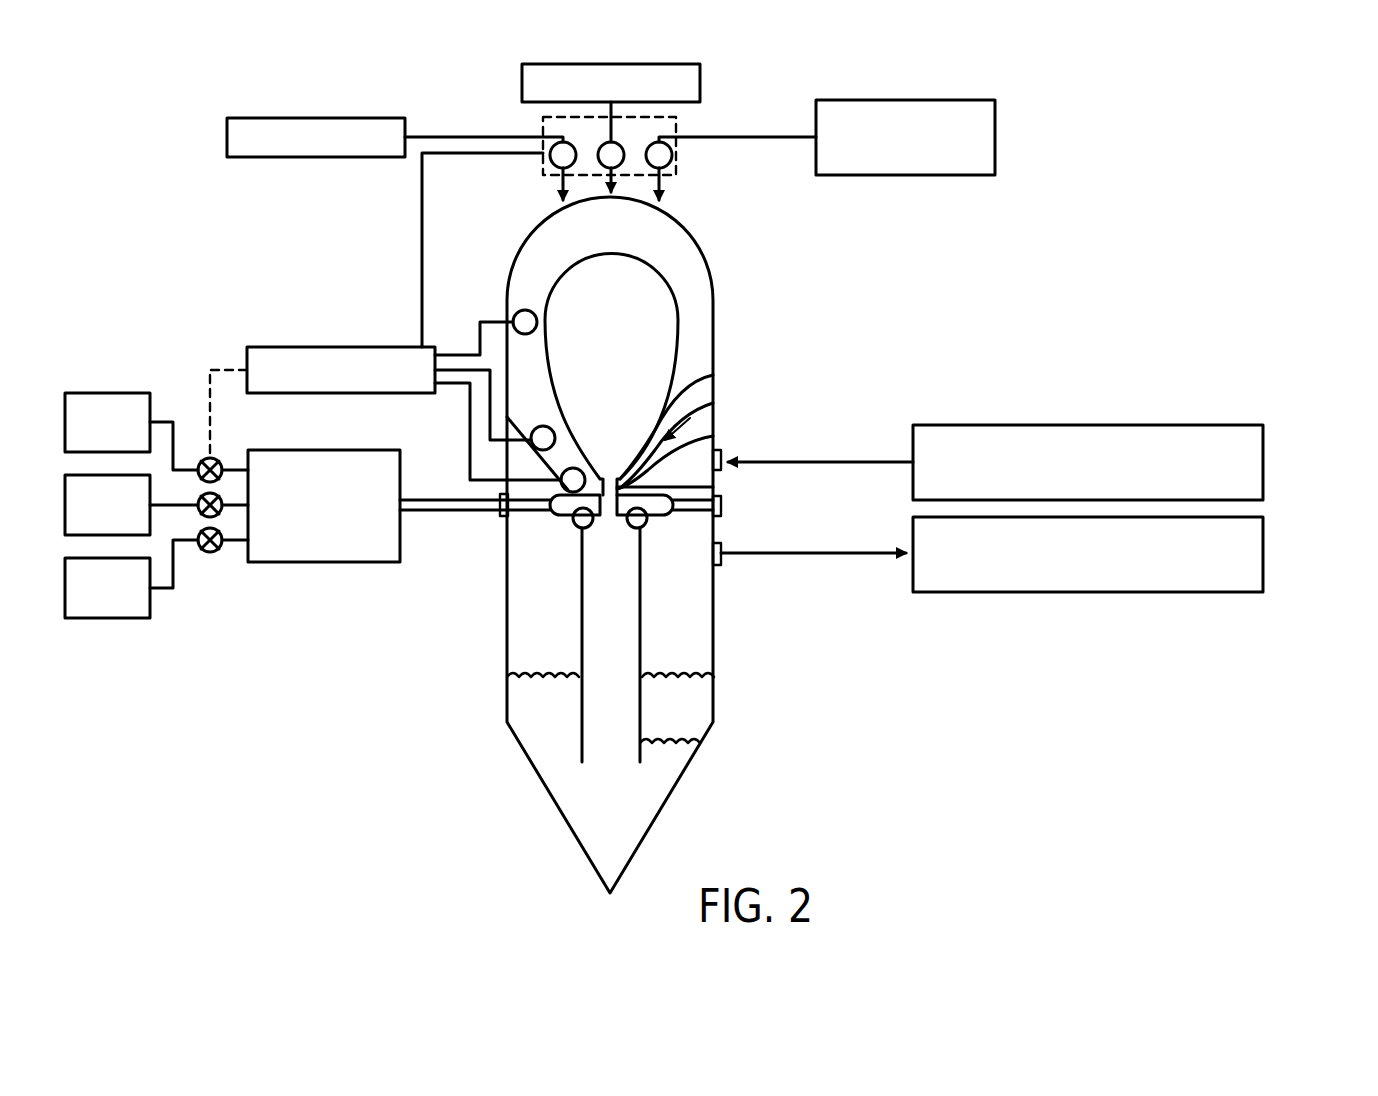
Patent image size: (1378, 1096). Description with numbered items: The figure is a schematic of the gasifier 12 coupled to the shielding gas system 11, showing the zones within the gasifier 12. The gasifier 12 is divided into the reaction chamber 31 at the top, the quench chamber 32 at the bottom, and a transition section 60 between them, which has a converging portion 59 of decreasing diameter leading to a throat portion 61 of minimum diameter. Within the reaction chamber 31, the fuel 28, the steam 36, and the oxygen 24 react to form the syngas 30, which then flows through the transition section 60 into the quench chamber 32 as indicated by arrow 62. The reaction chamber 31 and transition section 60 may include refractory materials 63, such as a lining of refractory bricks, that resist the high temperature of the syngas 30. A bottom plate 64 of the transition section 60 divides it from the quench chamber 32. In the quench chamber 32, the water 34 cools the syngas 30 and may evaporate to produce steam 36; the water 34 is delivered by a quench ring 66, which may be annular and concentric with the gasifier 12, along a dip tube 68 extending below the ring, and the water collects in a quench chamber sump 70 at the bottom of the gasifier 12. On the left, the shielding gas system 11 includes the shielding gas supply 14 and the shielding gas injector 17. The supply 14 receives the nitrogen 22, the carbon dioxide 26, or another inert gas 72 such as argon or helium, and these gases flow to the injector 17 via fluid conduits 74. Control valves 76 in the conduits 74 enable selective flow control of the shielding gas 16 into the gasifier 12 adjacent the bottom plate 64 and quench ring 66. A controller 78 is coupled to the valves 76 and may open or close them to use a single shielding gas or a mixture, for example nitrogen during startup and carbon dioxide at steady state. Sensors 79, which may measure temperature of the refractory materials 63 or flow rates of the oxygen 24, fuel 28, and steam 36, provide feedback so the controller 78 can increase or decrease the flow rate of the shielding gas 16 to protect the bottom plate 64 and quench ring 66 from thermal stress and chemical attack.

The shielding gas system 11 is at (190, 284).
The gasifier 12 is at (493, 835).
The shielding gas supply 14 is at (325, 563).
The shielding gas 16 is at (458, 525).
The shielding gas injector 17 is at (572, 527).
The nitrogen 22 is at (108, 393).
The oxygen 24 is at (227, 133).
The carbon dioxide 26 is at (65, 500).
The fuel 28 is at (522, 82).
The syngas 30 is at (1263, 548).
The reaction chamber 31 is at (722, 220).
The quench chamber 32 is at (483, 667).
The water 34 is at (1263, 457).
The steam 36 is at (995, 133).
The converging portion 59 is at (713, 375).
The transition section 60 is at (713, 403).
The throat portion 61 is at (713, 436).
The arrow 62 is at (612, 470).
The refractory materials 63 is at (706, 273).
The bottom plate 64 is at (713, 487).
The quench ring 66 is at (648, 527).
The dip tube 68 is at (640, 593).
The quench chamber sump 70 is at (625, 800).
The inert gas 72 is at (104, 618).
The fluid conduits 74 is at (168, 422).
The control valves 76 is at (222, 460).
The controller 78 is at (341, 347).
The sensors 79 is at (678, 158).